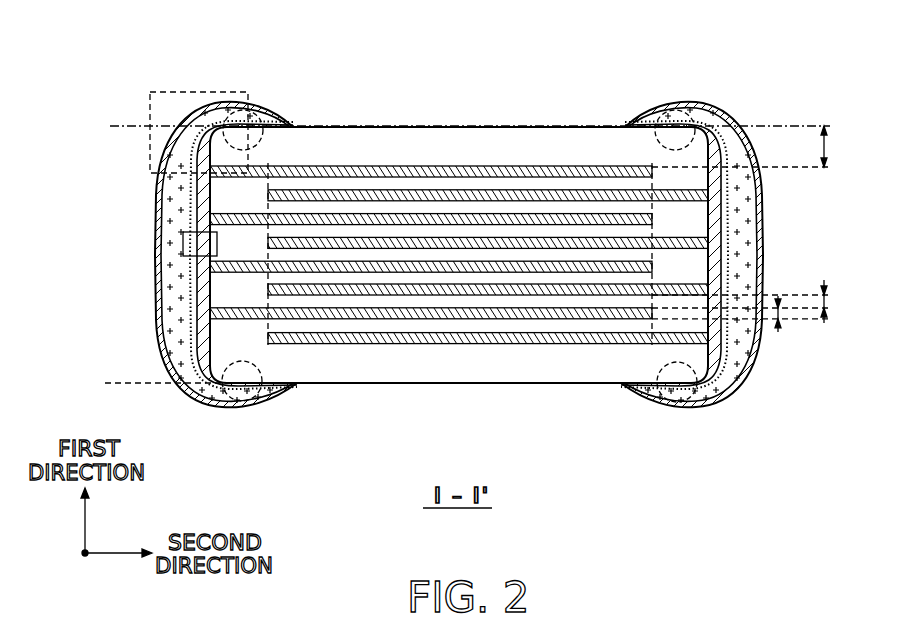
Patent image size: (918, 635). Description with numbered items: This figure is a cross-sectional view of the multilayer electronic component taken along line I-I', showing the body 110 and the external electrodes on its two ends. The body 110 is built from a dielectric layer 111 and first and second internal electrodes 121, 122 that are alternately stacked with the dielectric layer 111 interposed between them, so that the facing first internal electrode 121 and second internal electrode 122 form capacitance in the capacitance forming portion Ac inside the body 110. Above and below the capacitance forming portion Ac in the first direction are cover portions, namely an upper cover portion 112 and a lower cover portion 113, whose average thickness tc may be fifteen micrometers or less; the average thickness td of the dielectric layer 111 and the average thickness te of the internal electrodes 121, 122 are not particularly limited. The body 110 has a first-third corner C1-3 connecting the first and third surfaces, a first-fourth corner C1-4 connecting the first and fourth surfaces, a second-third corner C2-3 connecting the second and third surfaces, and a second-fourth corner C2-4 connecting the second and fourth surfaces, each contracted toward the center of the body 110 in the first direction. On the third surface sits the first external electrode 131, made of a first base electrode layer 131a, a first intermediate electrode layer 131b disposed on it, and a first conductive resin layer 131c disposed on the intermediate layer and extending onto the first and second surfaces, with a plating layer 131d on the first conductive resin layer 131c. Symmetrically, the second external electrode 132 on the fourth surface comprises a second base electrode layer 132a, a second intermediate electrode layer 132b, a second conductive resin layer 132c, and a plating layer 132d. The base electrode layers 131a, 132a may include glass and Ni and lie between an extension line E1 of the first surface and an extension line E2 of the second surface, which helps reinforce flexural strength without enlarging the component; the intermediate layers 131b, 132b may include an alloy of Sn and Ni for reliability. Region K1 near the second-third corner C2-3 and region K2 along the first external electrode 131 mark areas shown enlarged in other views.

The body 110 is at (390, 127).
The dielectric layer 111 is at (323, 178).
The upper cover portion 112 is at (452, 127).
The lower cover portion 113 is at (473, 363).
The first internal electrode 121 is at (504, 166).
The second internal electrode 122 is at (578, 190).
The first external electrode 131 is at (160, 255).
The first base electrode layer 131a is at (198, 190).
The first intermediate electrode layer 131b is at (191, 211).
The first conductive resin layer 131c is at (175, 237).
The plating layer 131d is at (73, 172).
The second external electrode 132 is at (762, 255).
The second base electrode layer 132a is at (755, 183).
The second intermediate electrode layer 132b is at (726, 208).
The second conductive resin layer 132c is at (742, 232).
The plating layer 132d is at (763, 254).
The region K1 is at (150, 104).
The region K2 is at (218, 243).
The extension line of the first surface E1 is at (186, 383).
The extension line of the second surface E2 is at (451, 126).
The first-third corner C1-3 is at (262, 400).
The first-fourth corner C1-4 is at (655, 401).
The second-third corner C2-3 is at (258, 111).
The second-fourth corner C2-4 is at (660, 111).
The capacitance forming portion Ac is at (567, 344).
The average thickness of the cover portions tc is at (753, 146).
The average thickness of the dielectric layer td is at (754, 301).
The average thickness of the internal electrodes te is at (741, 315).